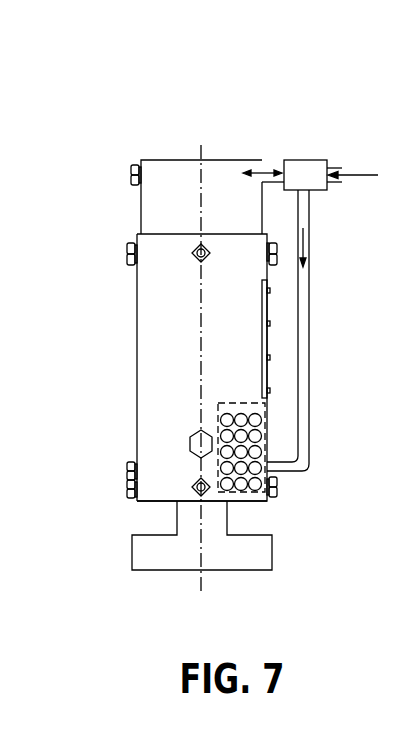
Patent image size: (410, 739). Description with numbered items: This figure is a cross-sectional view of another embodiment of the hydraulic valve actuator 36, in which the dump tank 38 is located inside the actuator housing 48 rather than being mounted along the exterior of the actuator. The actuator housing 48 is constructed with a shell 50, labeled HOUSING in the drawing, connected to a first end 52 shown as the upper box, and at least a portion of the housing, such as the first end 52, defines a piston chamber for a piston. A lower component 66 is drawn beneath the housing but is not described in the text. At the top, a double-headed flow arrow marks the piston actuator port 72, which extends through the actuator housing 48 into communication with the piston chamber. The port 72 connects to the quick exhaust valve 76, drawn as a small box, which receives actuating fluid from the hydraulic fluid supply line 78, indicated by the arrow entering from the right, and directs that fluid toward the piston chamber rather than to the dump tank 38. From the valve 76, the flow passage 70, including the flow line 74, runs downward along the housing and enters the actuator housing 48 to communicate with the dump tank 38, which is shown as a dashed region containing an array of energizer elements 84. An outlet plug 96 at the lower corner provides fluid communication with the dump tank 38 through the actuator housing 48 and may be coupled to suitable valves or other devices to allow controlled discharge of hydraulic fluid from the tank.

The valve actuator 36 is at (117, 312).
The dump tank 38 is at (238, 403).
The actuator housing 48 is at (137, 369).
The shell 50 is at (150, 403).
The first end 52 is at (146, 197).
The base 66 is at (132, 548).
The flow passage 70 is at (303, 245).
The piston actuator port 72 is at (262, 162).
The flow line 74 is at (309, 302).
The quick exhaust valve 76 is at (308, 160).
The hydraulic fluid supply line 78 is at (342, 168).
The energizer elements 84 is at (247, 495).
The outlet plug 96 is at (270, 498).